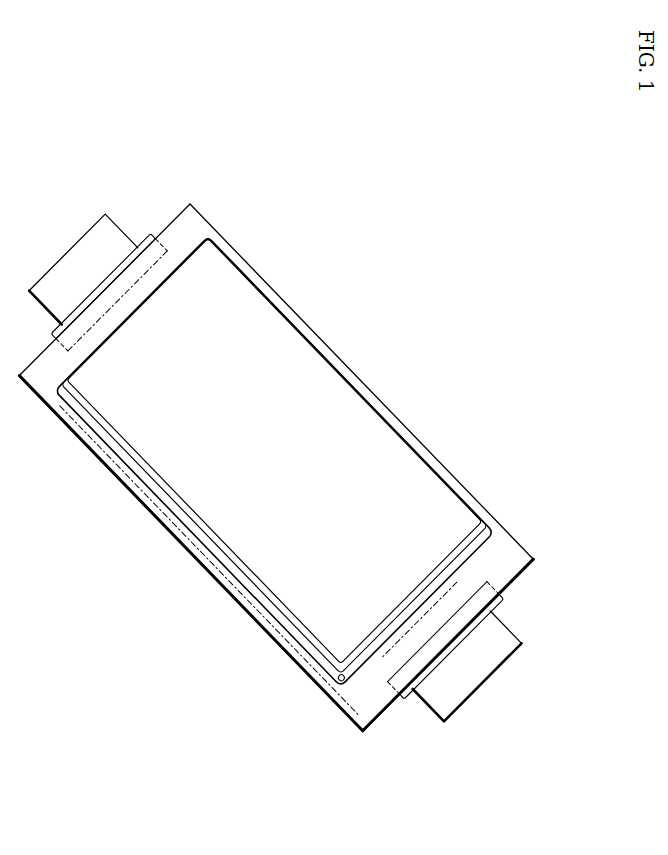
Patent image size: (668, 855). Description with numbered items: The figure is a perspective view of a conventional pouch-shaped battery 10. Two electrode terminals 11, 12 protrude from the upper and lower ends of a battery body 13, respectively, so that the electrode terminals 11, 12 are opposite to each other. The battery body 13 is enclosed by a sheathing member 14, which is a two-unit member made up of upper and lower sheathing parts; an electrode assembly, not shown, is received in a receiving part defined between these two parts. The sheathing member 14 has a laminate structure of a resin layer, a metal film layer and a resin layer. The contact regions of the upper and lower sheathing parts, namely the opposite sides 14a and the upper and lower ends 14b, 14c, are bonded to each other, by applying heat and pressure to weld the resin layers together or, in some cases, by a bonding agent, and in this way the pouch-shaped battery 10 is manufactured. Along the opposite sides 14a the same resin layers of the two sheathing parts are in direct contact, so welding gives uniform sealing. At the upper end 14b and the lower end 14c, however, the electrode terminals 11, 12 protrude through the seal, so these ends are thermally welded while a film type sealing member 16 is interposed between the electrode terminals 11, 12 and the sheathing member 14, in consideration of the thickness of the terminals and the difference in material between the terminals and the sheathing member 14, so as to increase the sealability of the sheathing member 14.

The pouch-shaped battery 10 is at (31, 82).
The electrode terminal 11 is at (78, 258).
The electrode terminal 12 is at (482, 683).
The battery body 13 is at (340, 397).
The sheathing member 14 is at (517, 542).
The opposite sides 14a is at (268, 630).
The upper end 14b is at (188, 225).
The lower end 14c is at (370, 700).
The film type sealing member 16 is at (500, 598).